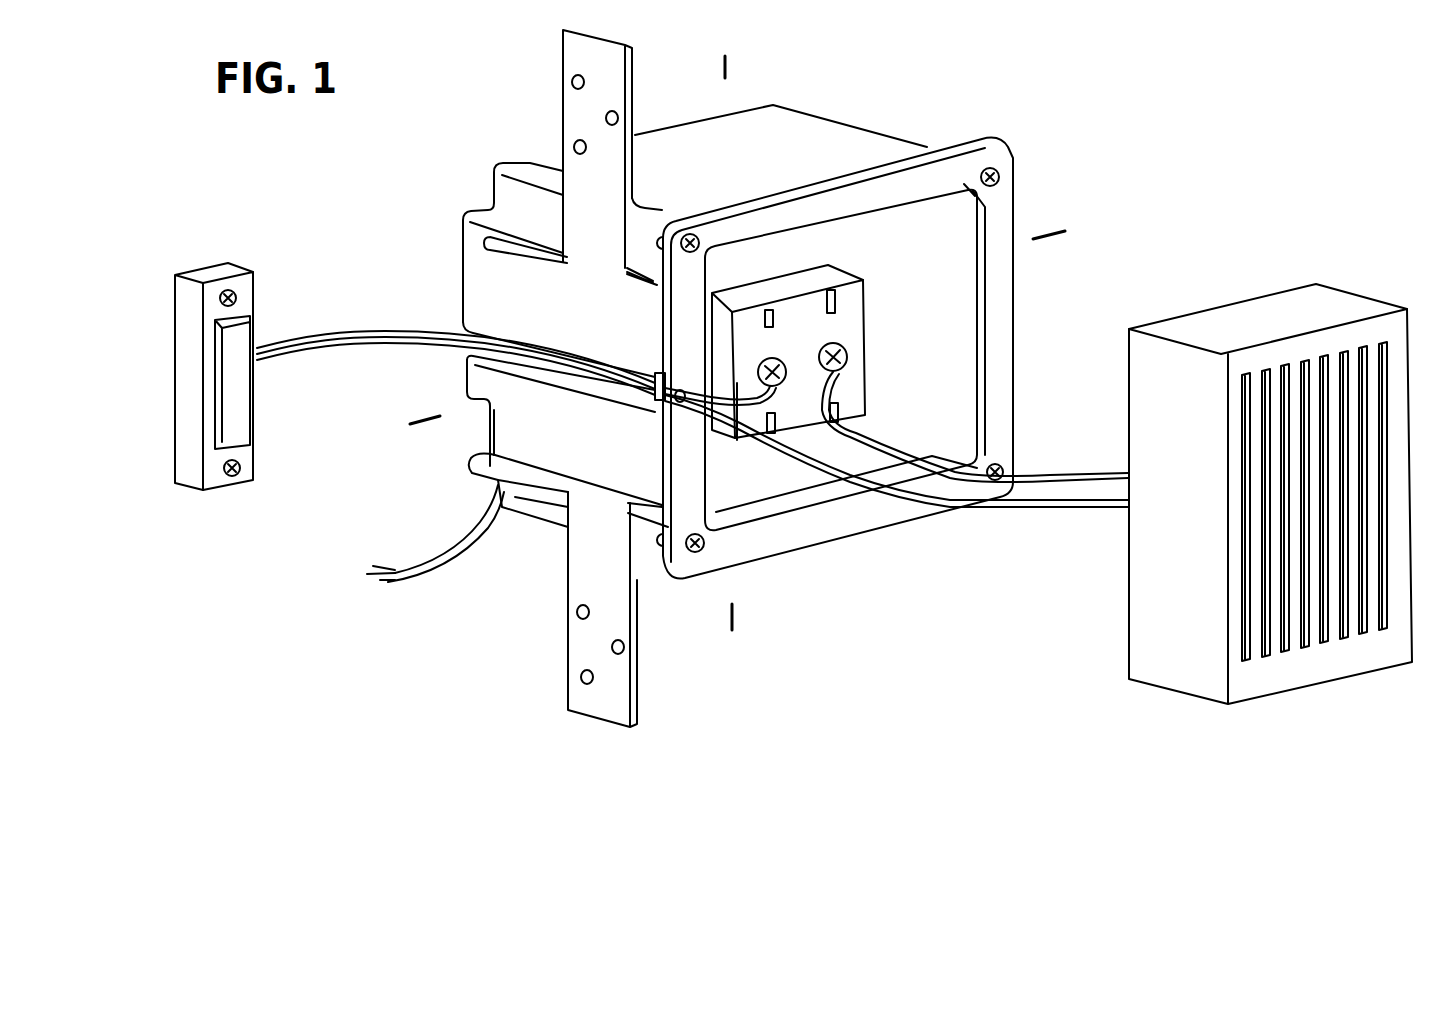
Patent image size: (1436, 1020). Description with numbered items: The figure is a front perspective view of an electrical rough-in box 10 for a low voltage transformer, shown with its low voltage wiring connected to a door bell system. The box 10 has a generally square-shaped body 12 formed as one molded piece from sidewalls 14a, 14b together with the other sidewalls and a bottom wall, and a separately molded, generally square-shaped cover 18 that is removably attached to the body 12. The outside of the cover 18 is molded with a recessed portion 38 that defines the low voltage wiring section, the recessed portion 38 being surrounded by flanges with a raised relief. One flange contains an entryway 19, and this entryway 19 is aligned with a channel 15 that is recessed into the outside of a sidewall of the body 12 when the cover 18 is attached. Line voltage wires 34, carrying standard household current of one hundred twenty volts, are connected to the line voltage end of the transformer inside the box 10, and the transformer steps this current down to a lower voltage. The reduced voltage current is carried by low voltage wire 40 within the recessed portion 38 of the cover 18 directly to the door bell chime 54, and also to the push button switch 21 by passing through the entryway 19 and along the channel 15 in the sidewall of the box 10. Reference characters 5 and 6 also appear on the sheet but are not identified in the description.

The section line 5- 5 is at (733, 65).
The section line 6- 6 is at (423, 405).
The box 10 is at (795, 378).
The body 12 is at (912, 124).
The sidewall 14a is at (598, 442).
The sidewall 14b is at (713, 167).
The channel 15 is at (546, 382).
The cover 18 is at (1022, 317).
The entryway 19 is at (672, 405).
The push button switch 21 is at (218, 486).
The line voltage wires 34 is at (437, 567).
The recessed portion 38 is at (915, 266).
The low voltage wire 40 is at (340, 362).
The door bell chime 54 is at (1259, 311).